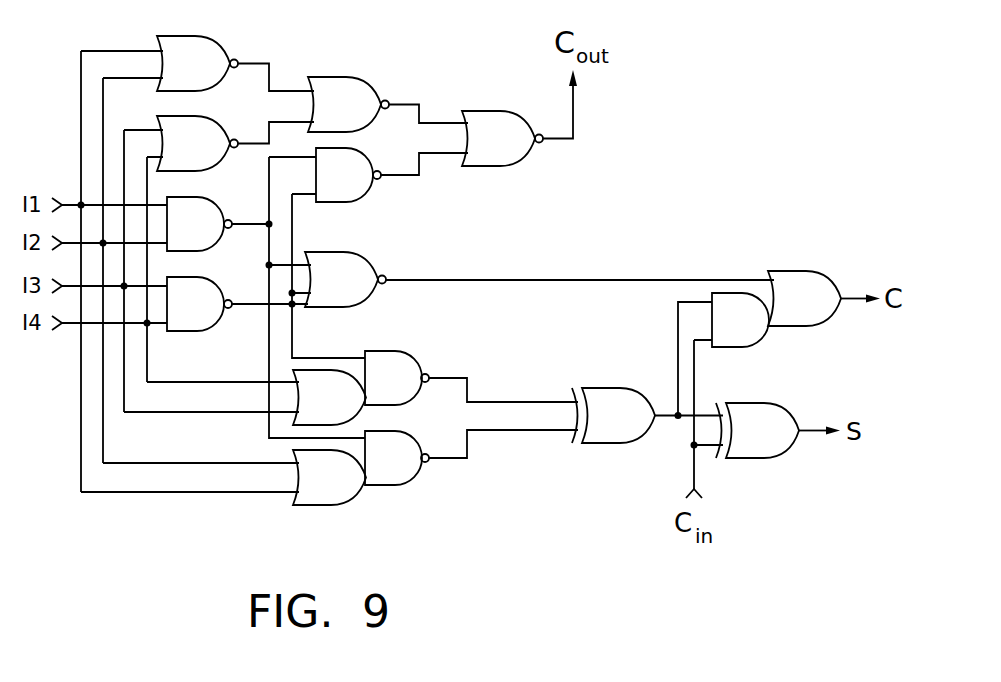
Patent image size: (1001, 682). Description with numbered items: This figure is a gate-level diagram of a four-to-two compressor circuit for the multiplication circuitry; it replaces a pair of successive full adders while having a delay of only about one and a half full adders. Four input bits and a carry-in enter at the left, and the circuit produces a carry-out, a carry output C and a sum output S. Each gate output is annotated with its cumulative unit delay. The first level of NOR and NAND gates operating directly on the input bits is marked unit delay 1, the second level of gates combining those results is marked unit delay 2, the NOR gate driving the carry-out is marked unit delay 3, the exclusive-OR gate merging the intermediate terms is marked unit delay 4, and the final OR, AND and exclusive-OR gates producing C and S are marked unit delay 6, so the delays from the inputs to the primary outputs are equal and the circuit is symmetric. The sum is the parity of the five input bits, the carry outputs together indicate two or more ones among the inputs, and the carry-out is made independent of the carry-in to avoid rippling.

The unit delay count 1 is at (207, 182).
The unit delay count 2 is at (371, 290).
The unit delay count 3 is at (509, 138).
The unit delay count 4 is at (619, 414).
The unit delay count 6 is at (784, 363).